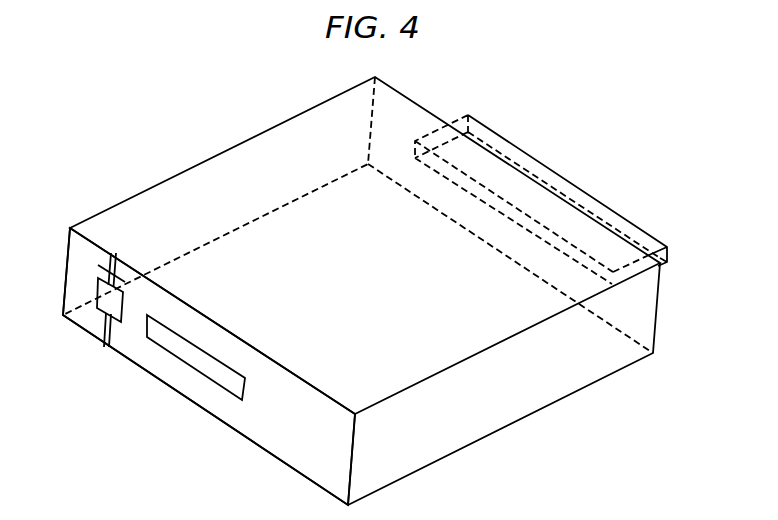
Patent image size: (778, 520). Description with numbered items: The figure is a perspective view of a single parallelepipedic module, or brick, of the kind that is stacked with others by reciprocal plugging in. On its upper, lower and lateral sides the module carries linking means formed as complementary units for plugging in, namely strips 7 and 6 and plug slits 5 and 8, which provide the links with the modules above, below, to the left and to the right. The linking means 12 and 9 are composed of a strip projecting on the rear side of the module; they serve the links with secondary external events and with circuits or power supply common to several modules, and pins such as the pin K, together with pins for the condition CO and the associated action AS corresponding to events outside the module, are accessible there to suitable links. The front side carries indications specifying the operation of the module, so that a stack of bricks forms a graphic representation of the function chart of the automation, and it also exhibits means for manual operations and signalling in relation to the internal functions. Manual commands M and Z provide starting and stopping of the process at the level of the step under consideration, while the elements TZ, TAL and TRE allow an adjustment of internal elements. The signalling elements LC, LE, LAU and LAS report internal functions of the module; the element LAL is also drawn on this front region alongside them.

The signalling element LC is at (136, 287).
The front wall of housing LAL is at (88, 256).
The signalling element LE is at (109, 300).
The manual command M is at (133, 338).
The signalling element LAU is at (157, 333).
The signalling element LAS is at (232, 380).
The adjustment element TZ is at (157, 362).
The adjustment element TAL is at (193, 388).
The adjustment element TRE is at (232, 412).
The manual command Z is at (281, 438).
The plug slit 5 is at (558, 177).
The strip 6 is at (541, 168).
The strip 7 is at (541, 168).
The plug slit 8 is at (541, 168).
The linking means 9 is at (541, 168).
The linking means 12 is at (541, 168).
The condition CO is at (541, 178).
The associated action AS is at (541, 178).
The pin K is at (541, 178).